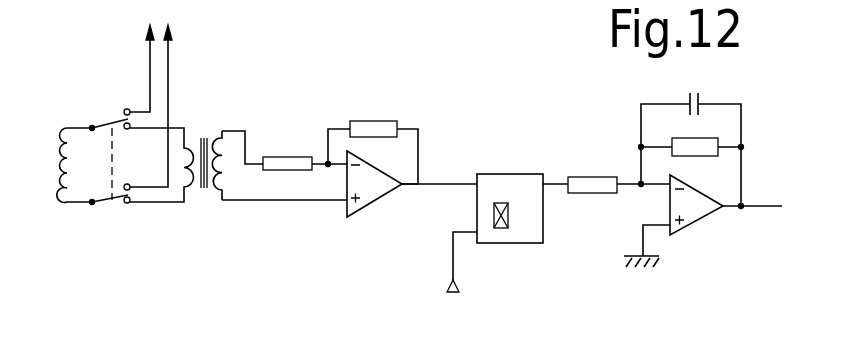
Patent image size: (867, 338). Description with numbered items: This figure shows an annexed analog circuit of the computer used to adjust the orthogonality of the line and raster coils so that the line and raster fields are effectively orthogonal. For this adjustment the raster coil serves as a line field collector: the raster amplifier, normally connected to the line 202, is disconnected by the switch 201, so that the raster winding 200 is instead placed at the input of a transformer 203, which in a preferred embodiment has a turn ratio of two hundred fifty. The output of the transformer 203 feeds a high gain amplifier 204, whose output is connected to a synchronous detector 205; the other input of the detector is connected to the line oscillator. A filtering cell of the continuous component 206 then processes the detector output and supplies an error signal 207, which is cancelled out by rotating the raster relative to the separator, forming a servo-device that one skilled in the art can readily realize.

The raster winding 200 is at (62, 203).
The switch 201 is at (102, 118).
The line 202 is at (168, 73).
The transformer 203 is at (203, 122).
The high gain amplifier 204 is at (330, 120).
The synchronous detector 205 is at (520, 243).
The filtering cell of the continuous component 206 is at (692, 233).
The error signal 207 is at (775, 212).